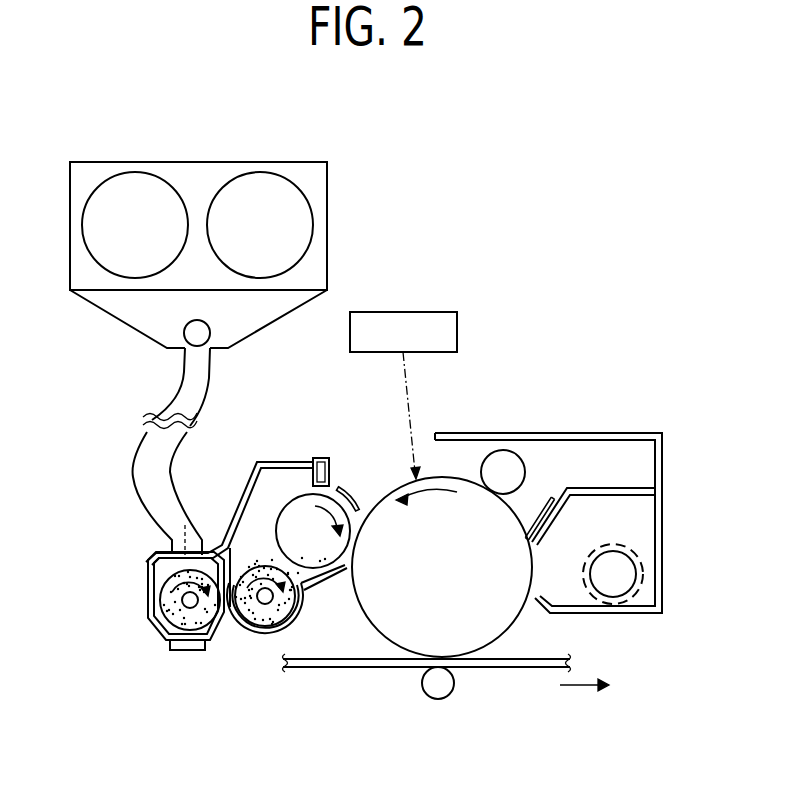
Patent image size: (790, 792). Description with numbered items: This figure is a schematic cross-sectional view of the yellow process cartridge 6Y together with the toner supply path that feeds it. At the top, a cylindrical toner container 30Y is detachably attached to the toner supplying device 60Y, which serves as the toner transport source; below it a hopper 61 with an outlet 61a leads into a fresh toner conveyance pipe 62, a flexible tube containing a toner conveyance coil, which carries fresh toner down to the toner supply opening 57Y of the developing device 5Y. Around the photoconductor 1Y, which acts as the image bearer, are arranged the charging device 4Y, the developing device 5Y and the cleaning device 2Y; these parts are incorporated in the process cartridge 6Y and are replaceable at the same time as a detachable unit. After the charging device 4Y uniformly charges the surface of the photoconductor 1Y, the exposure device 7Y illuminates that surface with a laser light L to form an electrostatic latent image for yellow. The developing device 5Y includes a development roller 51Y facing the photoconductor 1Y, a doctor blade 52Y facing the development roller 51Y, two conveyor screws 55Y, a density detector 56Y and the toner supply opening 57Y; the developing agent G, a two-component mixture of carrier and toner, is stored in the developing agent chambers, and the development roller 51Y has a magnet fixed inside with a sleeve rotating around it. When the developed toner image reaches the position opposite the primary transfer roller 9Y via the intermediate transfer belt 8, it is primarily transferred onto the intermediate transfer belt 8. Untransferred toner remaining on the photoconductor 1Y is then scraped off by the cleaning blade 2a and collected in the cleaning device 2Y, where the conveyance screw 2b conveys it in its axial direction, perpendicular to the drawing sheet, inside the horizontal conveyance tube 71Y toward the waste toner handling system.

The toner supplying device 60Y is at (329, 221).
The toner container 30Y is at (156, 239).
The hopper 61 is at (133, 325).
The toner outlet 61a is at (204, 330).
The fresh toner conveyance pipe 62 is at (134, 452).
The toner supply opening 57Y is at (176, 548).
The developing device 5Y is at (243, 490).
The process cartridge 6Y is at (322, 447).
The doctor blade 52Y is at (336, 486).
The development roller 51Y is at (334, 547).
The photoconductor 1Y is at (380, 630).
The developing agent G is at (300, 594).
The density detector 56Y is at (185, 652).
The conveyor screws 55Y is at (250, 617).
The charging device 4Y is at (522, 476).
The cleaning device 2Y is at (601, 487).
The cleaning blade 2a is at (541, 538).
The horizontal conveyance tube 71Y is at (600, 548).
The conveyance screw 2b is at (614, 548).
The exposure device 7Y is at (459, 326).
The laser light L is at (414, 410).
The intermediate transfer belt 8 is at (516, 669).
The primary transfer roller 9Y is at (443, 692).